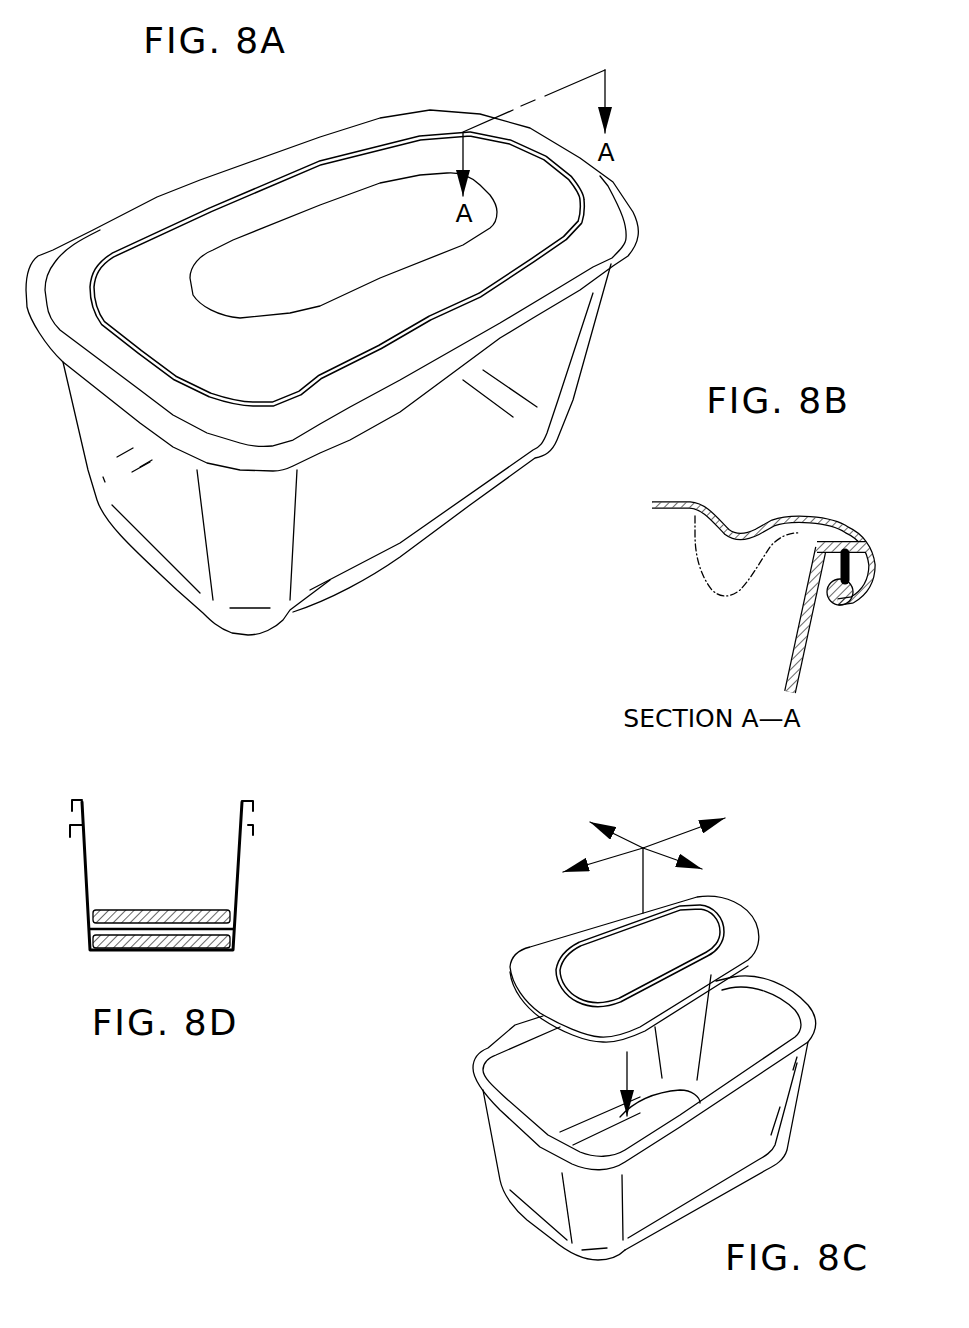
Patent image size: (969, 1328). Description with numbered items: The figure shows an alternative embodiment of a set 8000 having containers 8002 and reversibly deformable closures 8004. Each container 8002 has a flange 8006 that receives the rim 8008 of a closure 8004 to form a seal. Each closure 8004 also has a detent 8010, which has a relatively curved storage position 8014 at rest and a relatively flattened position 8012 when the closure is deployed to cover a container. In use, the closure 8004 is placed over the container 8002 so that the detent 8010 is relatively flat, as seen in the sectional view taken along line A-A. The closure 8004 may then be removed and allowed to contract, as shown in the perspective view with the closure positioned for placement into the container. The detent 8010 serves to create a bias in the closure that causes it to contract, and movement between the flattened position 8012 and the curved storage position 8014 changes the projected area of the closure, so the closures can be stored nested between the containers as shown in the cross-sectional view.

In FIG. 8D, the set 8000 is at (352, 873).
In FIG. 8A, the container 8002 is at (600, 322).
In FIG. 8B, the container 8002 is at (803, 668).
In FIG. 8D, the container 8002 is at (233, 897).
In FIG. 8C, the container 8002 is at (700, 1210).
In FIG. 8A, the closure 8004 is at (168, 223).
In FIG. 8B, the closure 8004 is at (820, 520).
In FIG. 8D, the closure 8004 is at (173, 940).
In FIG. 8C, the closure 8004 is at (732, 925).
In FIG. 8B, the flange 8006 is at (826, 543).
In FIG. 8D, the flange 8006 is at (257, 832).
In FIG. 8C, the flange 8006 is at (483, 1100).
In FIG. 8B, the rim 8008 is at (853, 601).
In FIG. 8A, the detent 8010 is at (343, 245).
In FIG. 8B, the detent 8010 is at (712, 512).
In FIG. 8A, the flattened position 8012 is at (110, 253).
In FIG. 8B, the flattened position 8012 is at (737, 525).
In FIG. 8B, the curved storage position 8014 is at (713, 590).